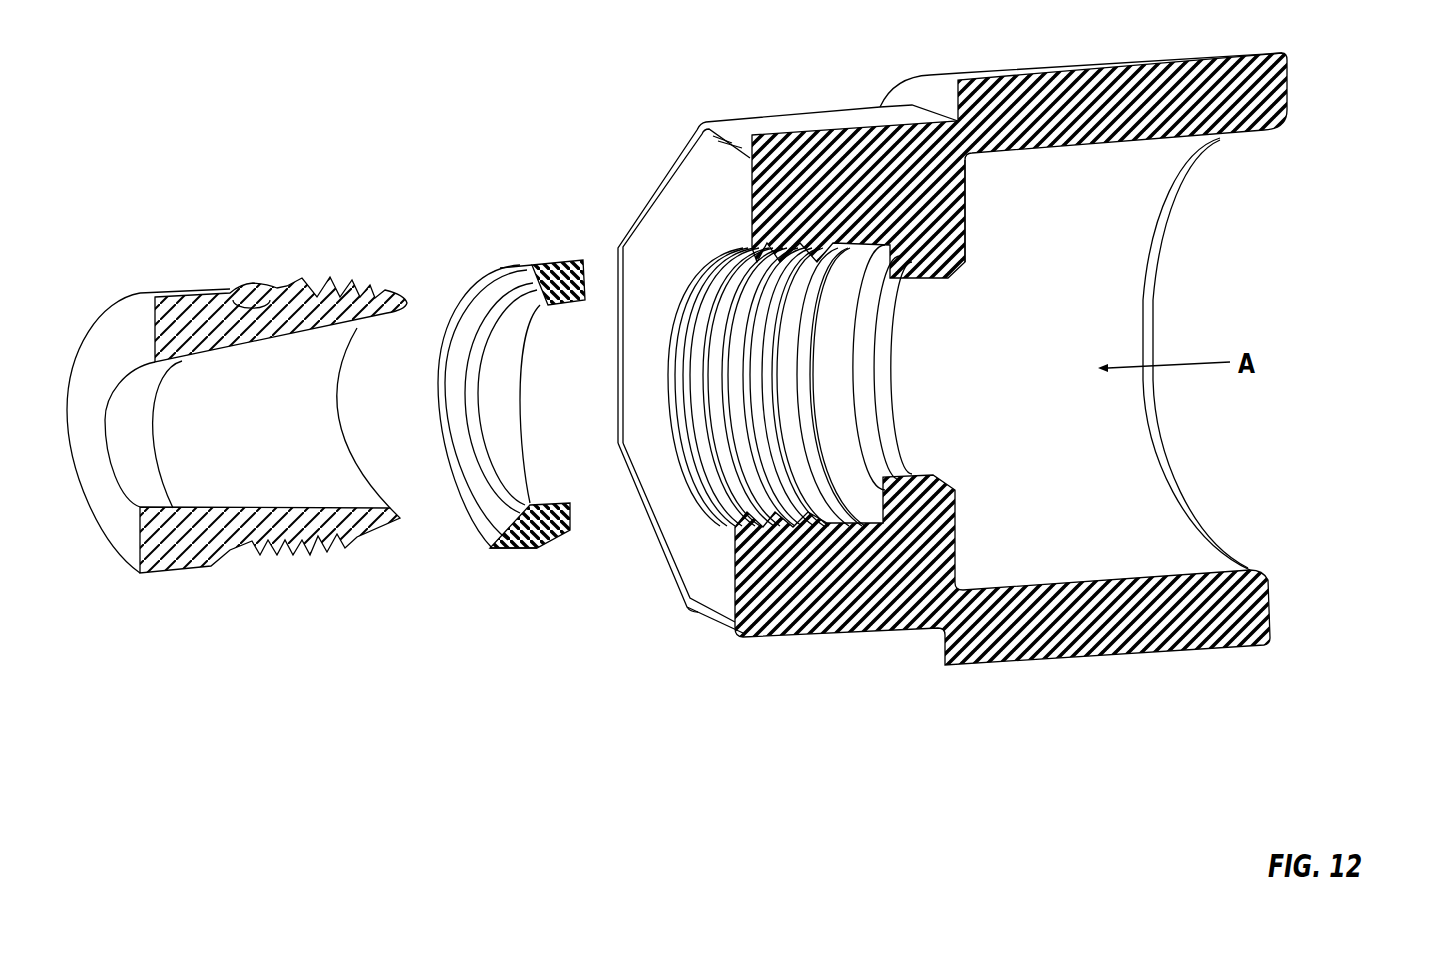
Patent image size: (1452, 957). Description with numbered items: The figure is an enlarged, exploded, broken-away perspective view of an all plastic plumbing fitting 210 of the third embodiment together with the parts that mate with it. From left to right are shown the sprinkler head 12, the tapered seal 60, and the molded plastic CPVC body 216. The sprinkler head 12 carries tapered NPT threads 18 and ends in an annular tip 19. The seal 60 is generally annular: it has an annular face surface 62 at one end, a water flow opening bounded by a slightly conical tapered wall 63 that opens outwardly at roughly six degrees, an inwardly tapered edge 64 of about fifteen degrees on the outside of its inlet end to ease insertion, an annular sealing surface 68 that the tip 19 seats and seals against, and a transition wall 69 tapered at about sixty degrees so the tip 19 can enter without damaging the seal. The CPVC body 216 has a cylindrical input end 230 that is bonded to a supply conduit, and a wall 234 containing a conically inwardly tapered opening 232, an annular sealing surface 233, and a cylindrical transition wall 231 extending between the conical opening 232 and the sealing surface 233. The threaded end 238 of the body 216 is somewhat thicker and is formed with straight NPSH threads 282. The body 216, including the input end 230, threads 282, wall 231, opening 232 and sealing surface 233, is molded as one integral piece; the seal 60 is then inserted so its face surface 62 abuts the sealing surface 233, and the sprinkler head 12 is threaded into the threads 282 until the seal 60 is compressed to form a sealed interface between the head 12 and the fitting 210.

The sprinkler head 12 is at (237, 407).
The tapered NPT threads 18 is at (329, 277).
The tip 19 is at (398, 520).
The tapered seal 60 is at (526, 441).
The annular face surface 62 is at (589, 272).
The tapered wall 63 is at (513, 450).
The inwardly tapered edge 64 is at (565, 528).
The annular sealing surface 68 is at (515, 297).
The transition wall 69 is at (504, 515).
The plumbing fitting 210 is at (916, 440).
The CPVC body 216 is at (796, 640).
The cylindrical input end 230 is at (1287, 83).
The cylindrical transition wall 231 is at (873, 433).
The conically inwardly tapered opening 232 is at (888, 357).
The sealing surface 233 is at (856, 300).
The wall 234 is at (966, 232).
The threaded end 238 is at (876, 607).
The straight NPSH threads 282 is at (735, 469).